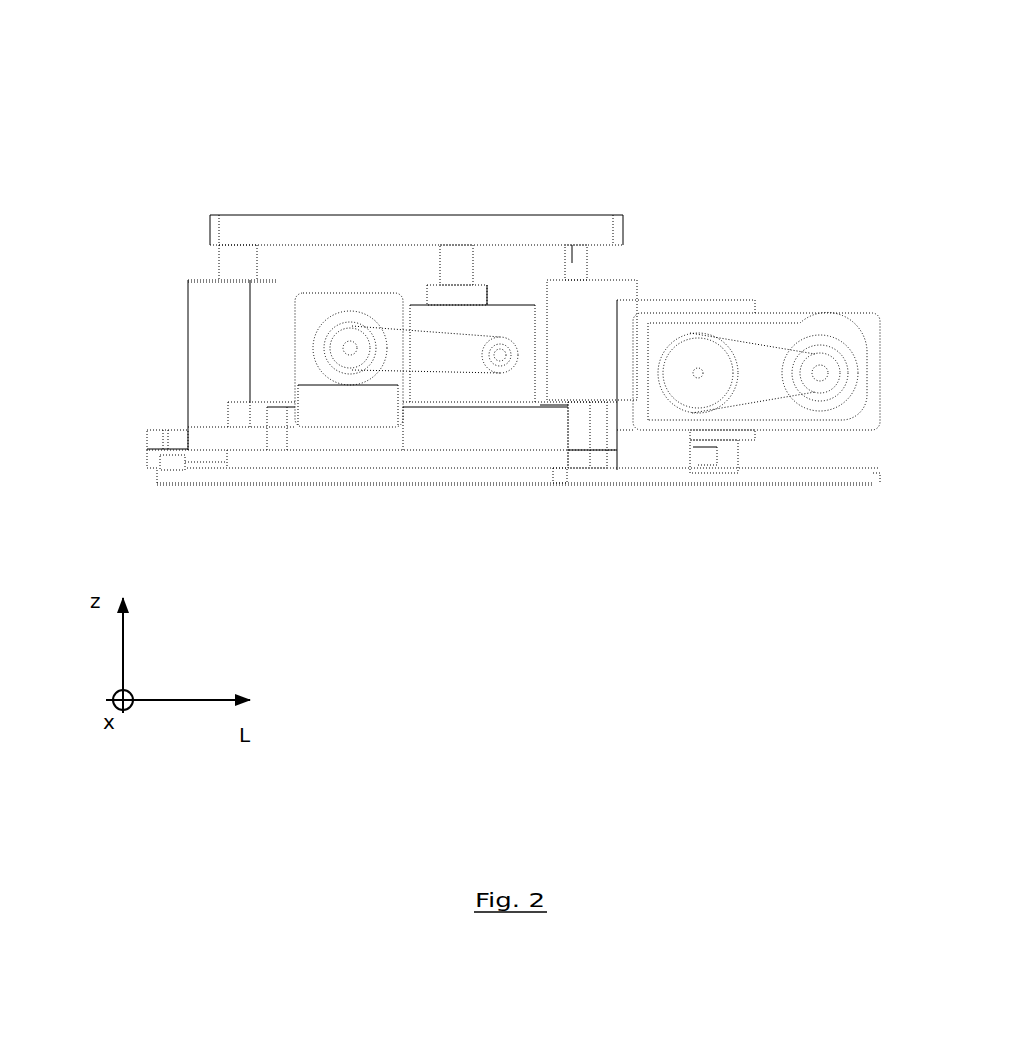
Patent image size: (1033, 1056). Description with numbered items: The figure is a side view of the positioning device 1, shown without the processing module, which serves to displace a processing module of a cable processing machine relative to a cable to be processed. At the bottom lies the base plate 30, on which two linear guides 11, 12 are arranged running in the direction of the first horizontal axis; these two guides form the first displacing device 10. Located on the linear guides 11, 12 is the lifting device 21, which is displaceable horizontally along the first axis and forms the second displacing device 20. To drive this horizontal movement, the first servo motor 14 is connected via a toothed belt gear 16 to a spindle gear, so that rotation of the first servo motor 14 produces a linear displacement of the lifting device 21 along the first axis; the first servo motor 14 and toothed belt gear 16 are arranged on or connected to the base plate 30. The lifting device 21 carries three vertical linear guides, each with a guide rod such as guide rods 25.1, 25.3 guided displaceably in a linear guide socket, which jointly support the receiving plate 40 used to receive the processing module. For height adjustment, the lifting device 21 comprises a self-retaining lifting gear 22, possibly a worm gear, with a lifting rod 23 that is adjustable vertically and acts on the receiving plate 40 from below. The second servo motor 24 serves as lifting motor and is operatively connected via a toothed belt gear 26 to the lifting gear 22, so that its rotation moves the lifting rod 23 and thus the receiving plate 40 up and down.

The positioning device 1 is at (638, 647).
The first displacing device 10 is at (825, 272).
The linear guide 11 is at (174, 463).
The linear guide 12 is at (703, 463).
The first servo motor 14 is at (843, 392).
The toothed belt gear 16 is at (767, 400).
The second displacing device 20 is at (458, 105).
The lifting device 21 is at (508, 105).
The lifting gear 22 is at (470, 298).
The lifting rod 23 is at (457, 272).
The second servo motor 24 is at (312, 367).
The guide rod 25.1 is at (235, 265).
The guide rod 25.3 is at (585, 262).
The toothed belt gear 26 is at (457, 372).
The base plate 30 is at (403, 477).
The receiving plate 40 is at (338, 233).